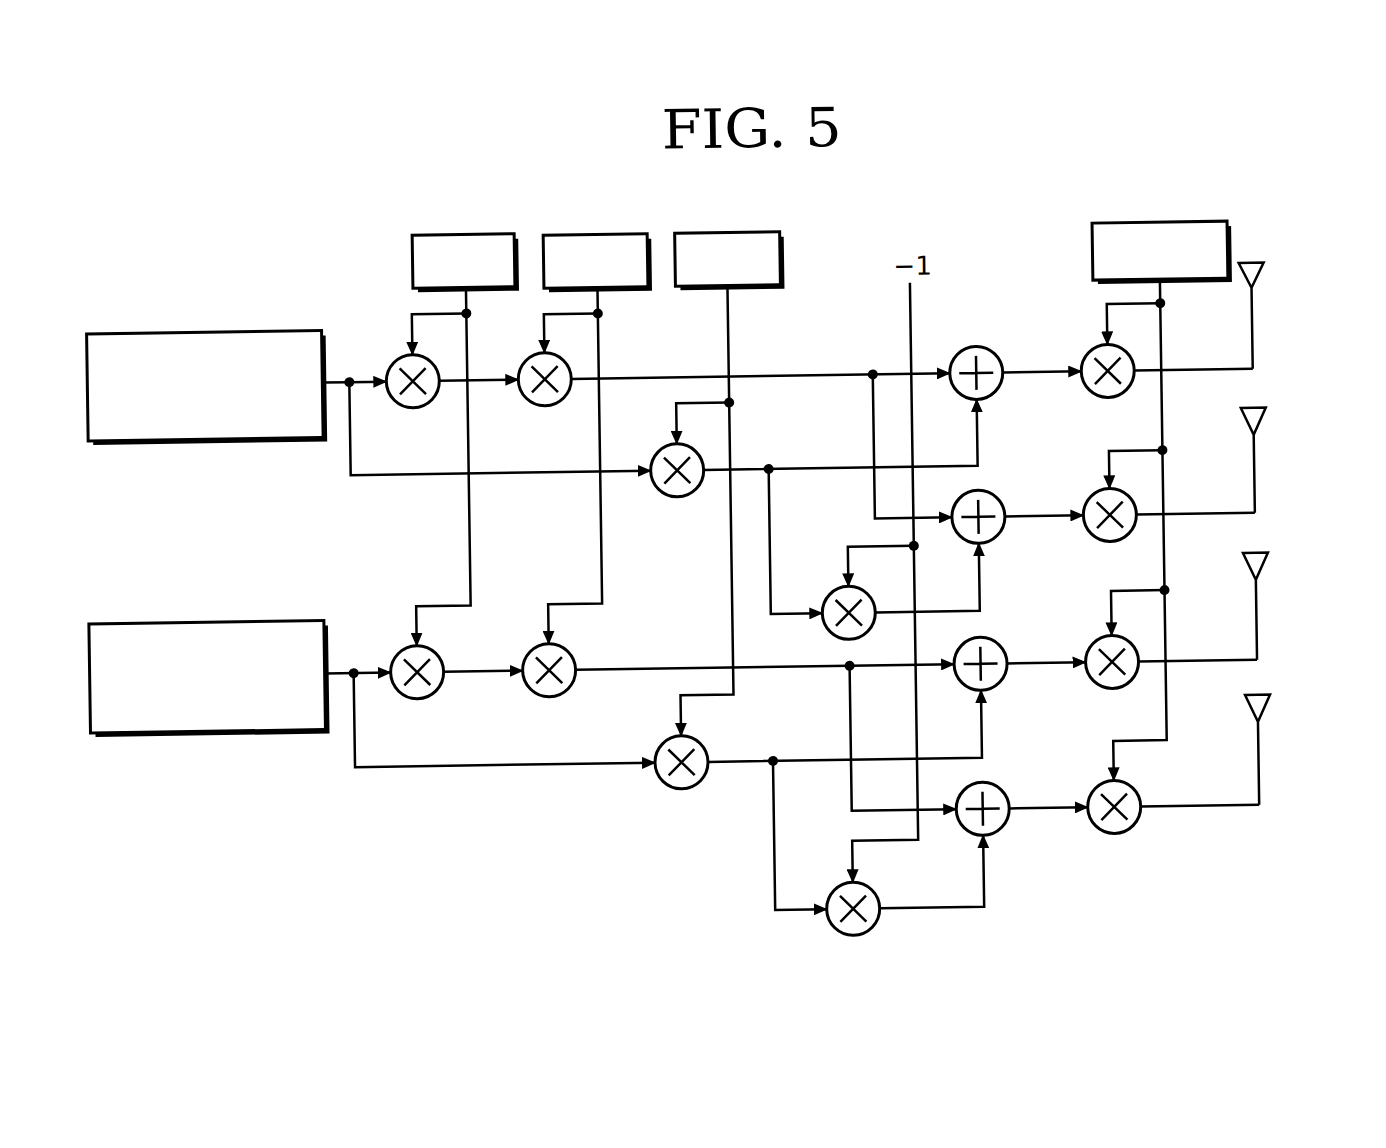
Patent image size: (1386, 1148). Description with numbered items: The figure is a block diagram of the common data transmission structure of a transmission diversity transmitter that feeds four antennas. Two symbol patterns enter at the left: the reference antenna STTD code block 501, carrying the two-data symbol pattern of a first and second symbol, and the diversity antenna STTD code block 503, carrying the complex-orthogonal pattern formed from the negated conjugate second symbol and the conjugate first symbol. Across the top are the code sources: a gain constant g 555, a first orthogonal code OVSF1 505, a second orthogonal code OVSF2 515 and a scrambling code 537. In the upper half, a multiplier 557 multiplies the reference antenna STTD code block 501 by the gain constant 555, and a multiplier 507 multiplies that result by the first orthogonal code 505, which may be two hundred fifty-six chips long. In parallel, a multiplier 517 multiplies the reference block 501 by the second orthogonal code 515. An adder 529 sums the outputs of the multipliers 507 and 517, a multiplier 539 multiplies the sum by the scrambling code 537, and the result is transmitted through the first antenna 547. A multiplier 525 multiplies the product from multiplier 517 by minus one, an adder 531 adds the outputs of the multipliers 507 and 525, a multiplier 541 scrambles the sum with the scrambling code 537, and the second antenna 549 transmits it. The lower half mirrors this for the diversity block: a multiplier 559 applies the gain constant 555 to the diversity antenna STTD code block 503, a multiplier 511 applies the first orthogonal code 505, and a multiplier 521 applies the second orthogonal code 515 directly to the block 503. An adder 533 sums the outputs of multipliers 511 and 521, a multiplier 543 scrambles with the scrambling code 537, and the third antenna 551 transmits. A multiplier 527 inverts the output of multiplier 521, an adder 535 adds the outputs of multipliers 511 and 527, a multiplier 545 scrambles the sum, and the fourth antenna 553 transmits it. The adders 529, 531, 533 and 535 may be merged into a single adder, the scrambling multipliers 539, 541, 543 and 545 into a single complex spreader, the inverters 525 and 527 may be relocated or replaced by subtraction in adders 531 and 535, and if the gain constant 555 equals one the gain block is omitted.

The reference antenna STTD code block 501 is at (210, 325).
The diversity antenna STTD code block 503 is at (208, 615).
The gain constant g 555 is at (469, 231).
The first orthogonal code OVSF1 505 is at (601, 233).
The second orthogonal code OVSF2 515 is at (731, 233).
The scrambling code 537 is at (1163, 229).
The multiplier 557 is at (399, 355).
The multiplier 559 is at (397, 646).
The multiplier 507 is at (528, 355).
The multiplier 511 is at (529, 645).
The multiplier 517 is at (658, 447).
The multiplier 521 is at (659, 739).
The multiplier 525 is at (828, 592).
The multiplier 527 is at (827, 887).
The adder 529 is at (1000, 355).
The adder 531 is at (1001, 501).
The adder 533 is at (999, 645).
The adder 535 is at (1000, 791).
The multiplier 539 is at (1092, 356).
The multiplier 541 is at (1094, 502).
The multiplier 543 is at (1092, 646).
The multiplier 545 is at (1090, 792).
The antenna #1 547 is at (1264, 270).
The antenna #2 549 is at (1262, 415).
The antenna #3 551 is at (1263, 561).
The antenna #4 553 is at (1264, 705).